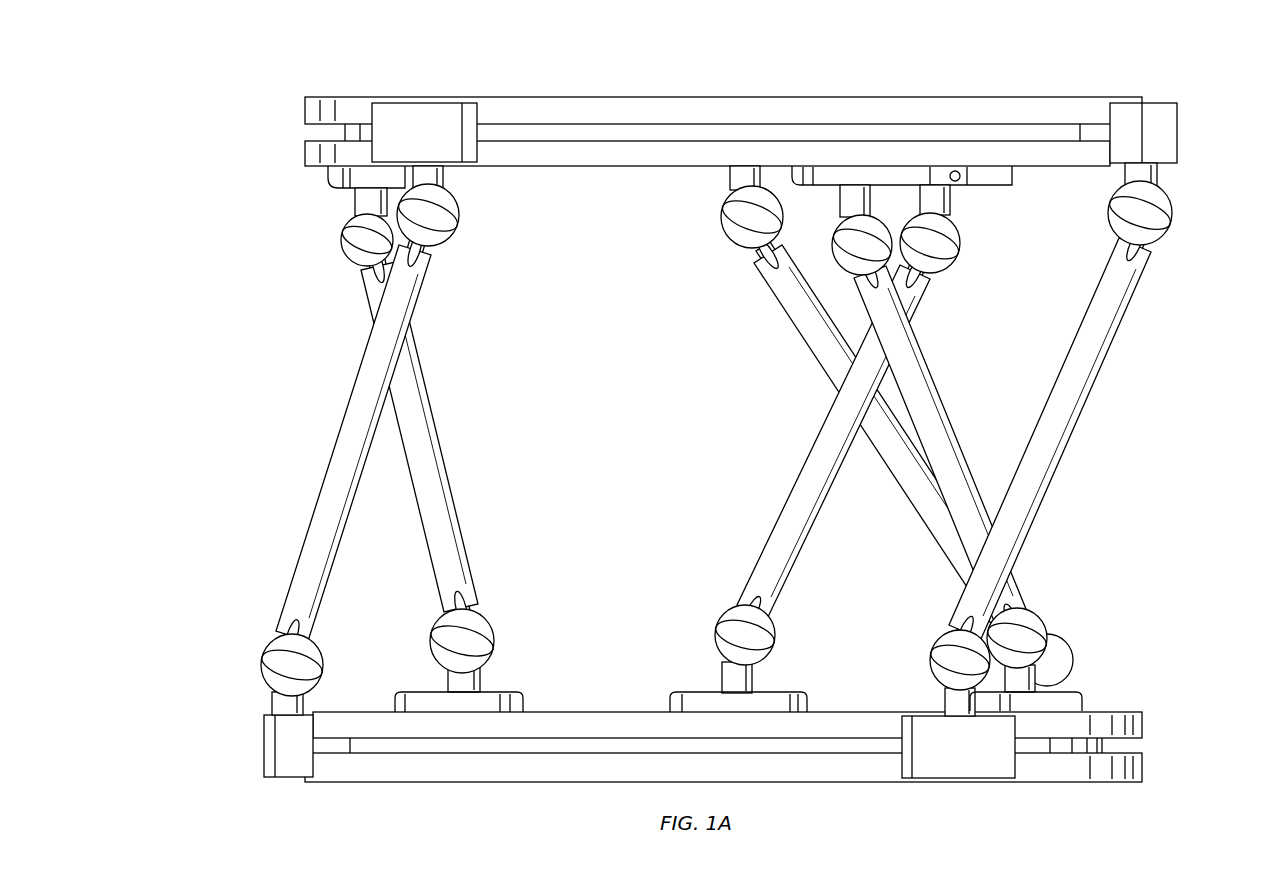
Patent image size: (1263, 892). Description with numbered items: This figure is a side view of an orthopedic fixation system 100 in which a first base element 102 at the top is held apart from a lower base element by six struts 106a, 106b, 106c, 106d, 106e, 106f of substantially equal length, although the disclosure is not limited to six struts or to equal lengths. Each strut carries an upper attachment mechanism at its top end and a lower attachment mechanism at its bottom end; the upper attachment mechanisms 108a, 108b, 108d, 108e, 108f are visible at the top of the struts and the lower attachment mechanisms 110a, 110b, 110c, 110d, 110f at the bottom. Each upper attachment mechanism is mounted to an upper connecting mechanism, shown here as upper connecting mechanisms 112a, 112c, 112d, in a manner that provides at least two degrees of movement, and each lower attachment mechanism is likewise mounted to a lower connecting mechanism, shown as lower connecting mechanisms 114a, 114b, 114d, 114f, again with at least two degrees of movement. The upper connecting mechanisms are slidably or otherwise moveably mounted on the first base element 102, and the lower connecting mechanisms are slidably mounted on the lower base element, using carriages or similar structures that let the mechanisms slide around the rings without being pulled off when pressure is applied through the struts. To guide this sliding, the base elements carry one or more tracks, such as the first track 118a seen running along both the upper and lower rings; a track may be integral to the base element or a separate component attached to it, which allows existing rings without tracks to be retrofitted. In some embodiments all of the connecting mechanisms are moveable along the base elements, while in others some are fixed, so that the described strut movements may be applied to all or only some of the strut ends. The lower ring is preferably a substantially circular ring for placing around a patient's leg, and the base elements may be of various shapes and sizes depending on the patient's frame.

The orthopedic fixation system 100 is at (158, 240).
The first base element 102 is at (534, 98).
The first track 118a is at (632, 130).
The upper connecting mechanism 112a is at (410, 118).
The upper connecting mechanism 112c is at (905, 192).
The upper connecting mechanism 112d is at (1168, 130).
The strut 106a is at (338, 460).
The strut 106b is at (445, 460).
The strut 106c is at (935, 352).
The strut 106d is at (1082, 432).
The strut 106e is at (790, 315).
The strut 106f is at (800, 487).
The upper attachment mechanism 108a is at (462, 228).
The upper attachment mechanism 108b is at (345, 243).
The upper attachment mechanism 108d is at (1172, 222).
The upper attachment mechanism 108e is at (723, 225).
The upper attachment mechanism 108f is at (963, 250).
The lower attachment mechanism 110a is at (258, 672).
The lower attachment mechanism 110b is at (495, 632).
The lower attachment mechanism 110c is at (1048, 625).
The lower attachment mechanism 110d is at (925, 650).
The lower attachment mechanism 110f is at (715, 625).
The lower connecting mechanism 114a is at (265, 747).
The lower connecting mechanism 114b is at (415, 695).
The lower connecting mechanism 114d is at (1012, 776).
The lower connecting mechanism 114f is at (698, 695).